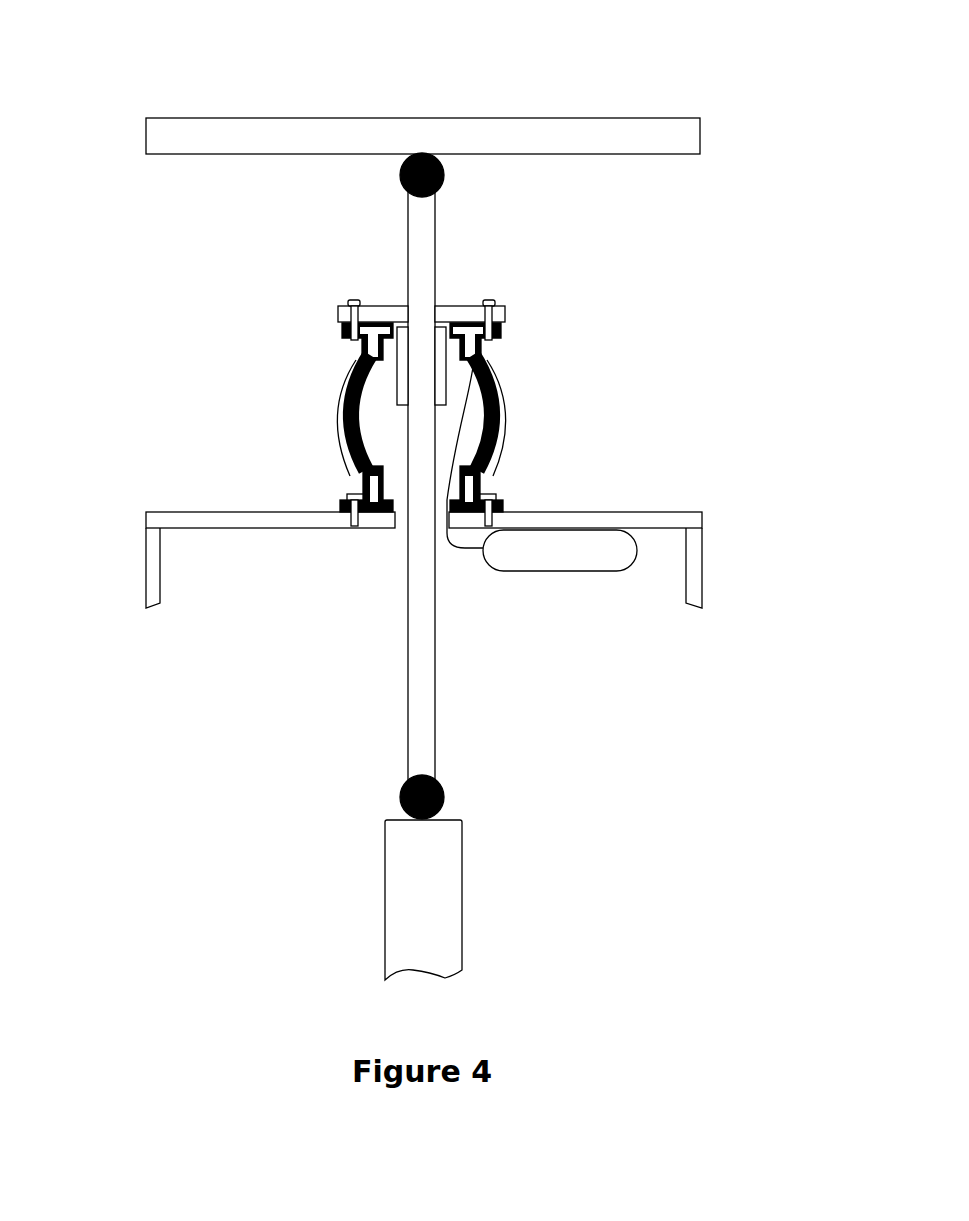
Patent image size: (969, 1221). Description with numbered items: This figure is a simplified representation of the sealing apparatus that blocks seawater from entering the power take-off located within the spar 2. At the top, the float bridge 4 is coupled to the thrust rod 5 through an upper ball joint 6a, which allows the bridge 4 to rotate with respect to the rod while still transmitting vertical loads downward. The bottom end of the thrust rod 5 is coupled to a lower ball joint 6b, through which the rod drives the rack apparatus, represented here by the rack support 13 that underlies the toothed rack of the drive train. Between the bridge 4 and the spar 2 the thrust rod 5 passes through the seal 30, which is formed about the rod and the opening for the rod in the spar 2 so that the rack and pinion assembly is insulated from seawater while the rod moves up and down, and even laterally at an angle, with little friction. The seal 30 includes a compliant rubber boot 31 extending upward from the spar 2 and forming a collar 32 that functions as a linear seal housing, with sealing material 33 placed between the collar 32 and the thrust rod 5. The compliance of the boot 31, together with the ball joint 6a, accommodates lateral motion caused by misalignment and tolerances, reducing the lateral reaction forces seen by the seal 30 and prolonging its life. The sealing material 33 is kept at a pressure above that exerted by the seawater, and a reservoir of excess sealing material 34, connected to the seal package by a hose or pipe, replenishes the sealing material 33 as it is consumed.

The spar 2 is at (678, 512).
The bridge 4 is at (340, 133).
The thrust rod 5 is at (428, 258).
The upper ball joint 6a is at (432, 165).
The lower ball joint 6b is at (443, 803).
The rack support 13 is at (393, 903).
The seal 30 is at (505, 323).
The compliant rubber boot 31 is at (348, 463).
The collar 32 is at (398, 387).
The sealing material 33 is at (440, 352).
The reservoir of excess sealing material 34 is at (570, 567).